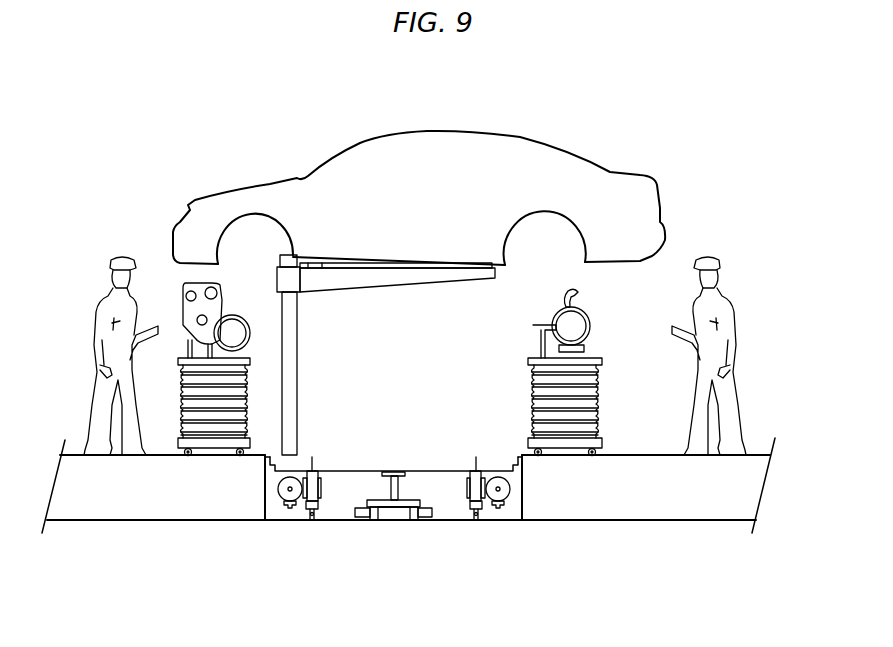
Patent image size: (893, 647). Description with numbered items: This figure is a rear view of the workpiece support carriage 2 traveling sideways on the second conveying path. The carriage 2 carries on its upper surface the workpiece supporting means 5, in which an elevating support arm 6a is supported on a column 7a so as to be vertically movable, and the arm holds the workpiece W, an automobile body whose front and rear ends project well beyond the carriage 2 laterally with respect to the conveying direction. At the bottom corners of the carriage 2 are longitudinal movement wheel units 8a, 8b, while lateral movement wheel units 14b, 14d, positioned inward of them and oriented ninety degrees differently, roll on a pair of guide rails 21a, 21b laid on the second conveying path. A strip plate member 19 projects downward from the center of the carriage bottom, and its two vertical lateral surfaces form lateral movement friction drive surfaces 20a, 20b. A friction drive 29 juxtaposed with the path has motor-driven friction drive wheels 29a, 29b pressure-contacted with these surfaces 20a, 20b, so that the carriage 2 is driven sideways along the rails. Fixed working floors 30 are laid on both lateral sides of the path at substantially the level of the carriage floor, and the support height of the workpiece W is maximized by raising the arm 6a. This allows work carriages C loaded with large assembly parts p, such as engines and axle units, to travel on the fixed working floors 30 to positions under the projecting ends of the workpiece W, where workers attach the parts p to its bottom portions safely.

The workpiece W is at (368, 137).
The workpiece supporting means 5 is at (329, 262).
The elevating support arm 6a is at (398, 274).
The column 7a is at (293, 322).
The large assembly part p is at (217, 307).
The fixed working floor 30 is at (150, 452).
The work carriage C is at (209, 442).
The workpiece support carriage 2 is at (397, 452).
The longitudinal movement wheel unit 8a is at (274, 491).
The longitudinal movement wheel unit 8b is at (516, 488).
The lateral movement wheel unit 14b is at (313, 455).
The lateral movement wheel unit 14d is at (478, 455).
The strip plate member 19 is at (406, 480).
The lateral movement friction drive surface 20a is at (393, 490).
The lateral movement friction drive surface 20b is at (412, 500).
The guide rail 21a is at (312, 506).
The guide rail 21b is at (480, 508).
The friction drive 29 is at (378, 526).
The motor-driven friction drive wheel 29a is at (367, 503).
The motor-driven friction drive wheel 29b is at (408, 510).